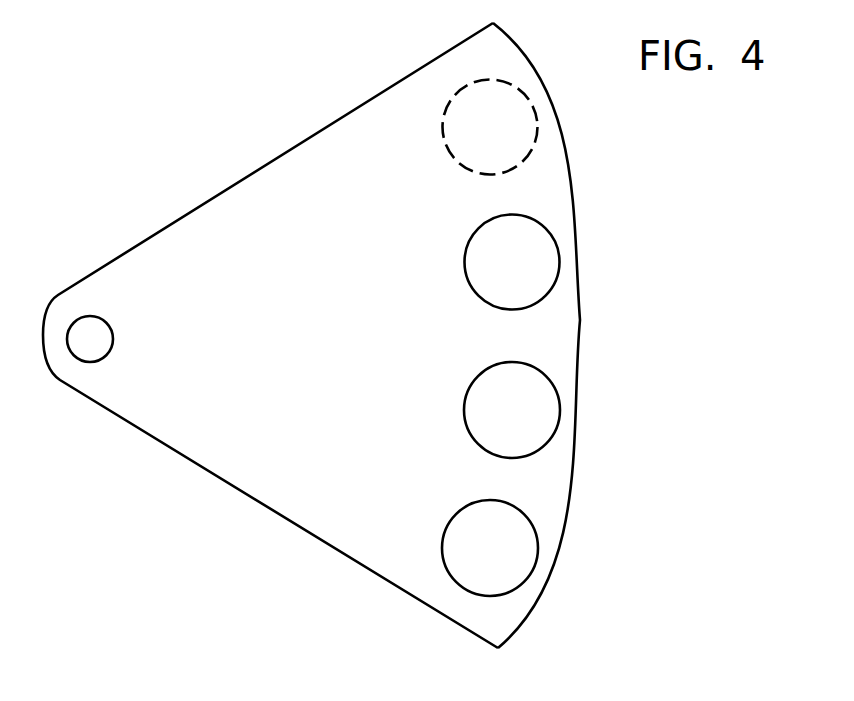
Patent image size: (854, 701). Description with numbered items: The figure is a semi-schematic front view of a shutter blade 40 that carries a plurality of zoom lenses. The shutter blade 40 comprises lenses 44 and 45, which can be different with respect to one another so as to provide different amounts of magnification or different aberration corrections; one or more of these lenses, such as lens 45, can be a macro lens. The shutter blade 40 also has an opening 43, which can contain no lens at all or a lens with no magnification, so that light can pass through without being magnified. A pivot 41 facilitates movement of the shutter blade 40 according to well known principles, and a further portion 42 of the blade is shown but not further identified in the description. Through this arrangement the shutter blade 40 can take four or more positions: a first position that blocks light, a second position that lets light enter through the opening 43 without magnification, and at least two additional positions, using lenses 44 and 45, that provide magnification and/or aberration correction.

The shutter blade 40 is at (323, 127).
The pivot 41 is at (115, 340).
The optional hole (phantom) 42 is at (442, 128).
The opening 43 is at (563, 262).
The lens 44 is at (560, 409).
The lens 45 is at (538, 548).